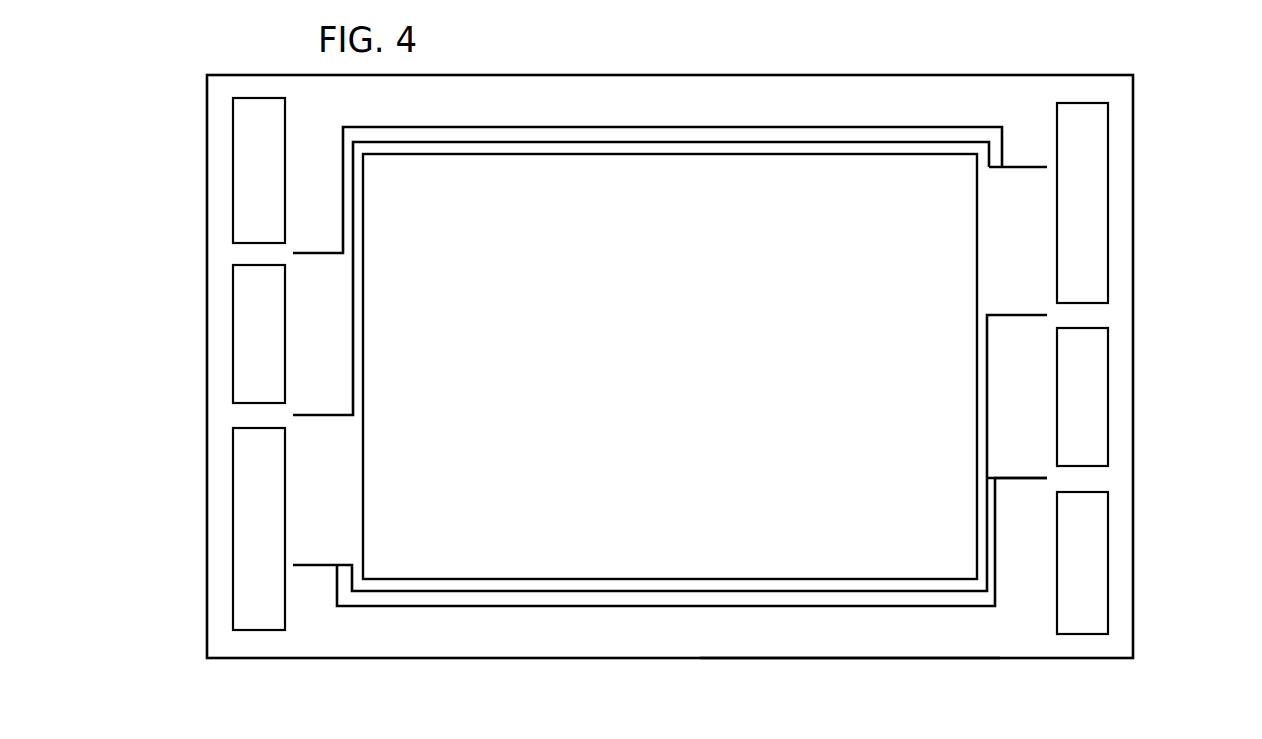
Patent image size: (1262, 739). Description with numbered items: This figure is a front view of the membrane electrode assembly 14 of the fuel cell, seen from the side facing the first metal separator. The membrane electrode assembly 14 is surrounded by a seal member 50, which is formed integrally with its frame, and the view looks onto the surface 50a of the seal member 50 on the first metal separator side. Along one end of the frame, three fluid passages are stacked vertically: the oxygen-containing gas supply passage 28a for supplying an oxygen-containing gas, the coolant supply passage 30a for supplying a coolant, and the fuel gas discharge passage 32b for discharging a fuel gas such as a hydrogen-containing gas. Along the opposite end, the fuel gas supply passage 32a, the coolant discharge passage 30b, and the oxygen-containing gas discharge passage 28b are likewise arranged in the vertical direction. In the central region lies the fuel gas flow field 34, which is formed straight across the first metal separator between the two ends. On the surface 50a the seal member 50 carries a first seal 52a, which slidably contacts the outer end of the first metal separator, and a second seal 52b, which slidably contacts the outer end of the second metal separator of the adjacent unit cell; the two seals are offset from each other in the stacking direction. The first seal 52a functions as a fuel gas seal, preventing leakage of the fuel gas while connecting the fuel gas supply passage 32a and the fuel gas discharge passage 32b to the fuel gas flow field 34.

The membrane electrode assembly 14 is at (892, 63).
The oxygen-containing gas supply passage 28a is at (259, 170).
The oxygen-containing gas discharge passage 28b is at (1082, 563).
The coolant supply passage 30a is at (248, 330).
The coolant discharge passage 30b is at (1097, 407).
The fuel gas supply passage 32a is at (1082, 203).
The fuel gas discharge passage 32b is at (259, 529).
The fuel gas flow field 34 is at (675, 178).
The seal member 50 is at (667, 663).
The surface 50a is at (848, 636).
The first seal 52a is at (627, 592).
The second seal 52b is at (582, 606).